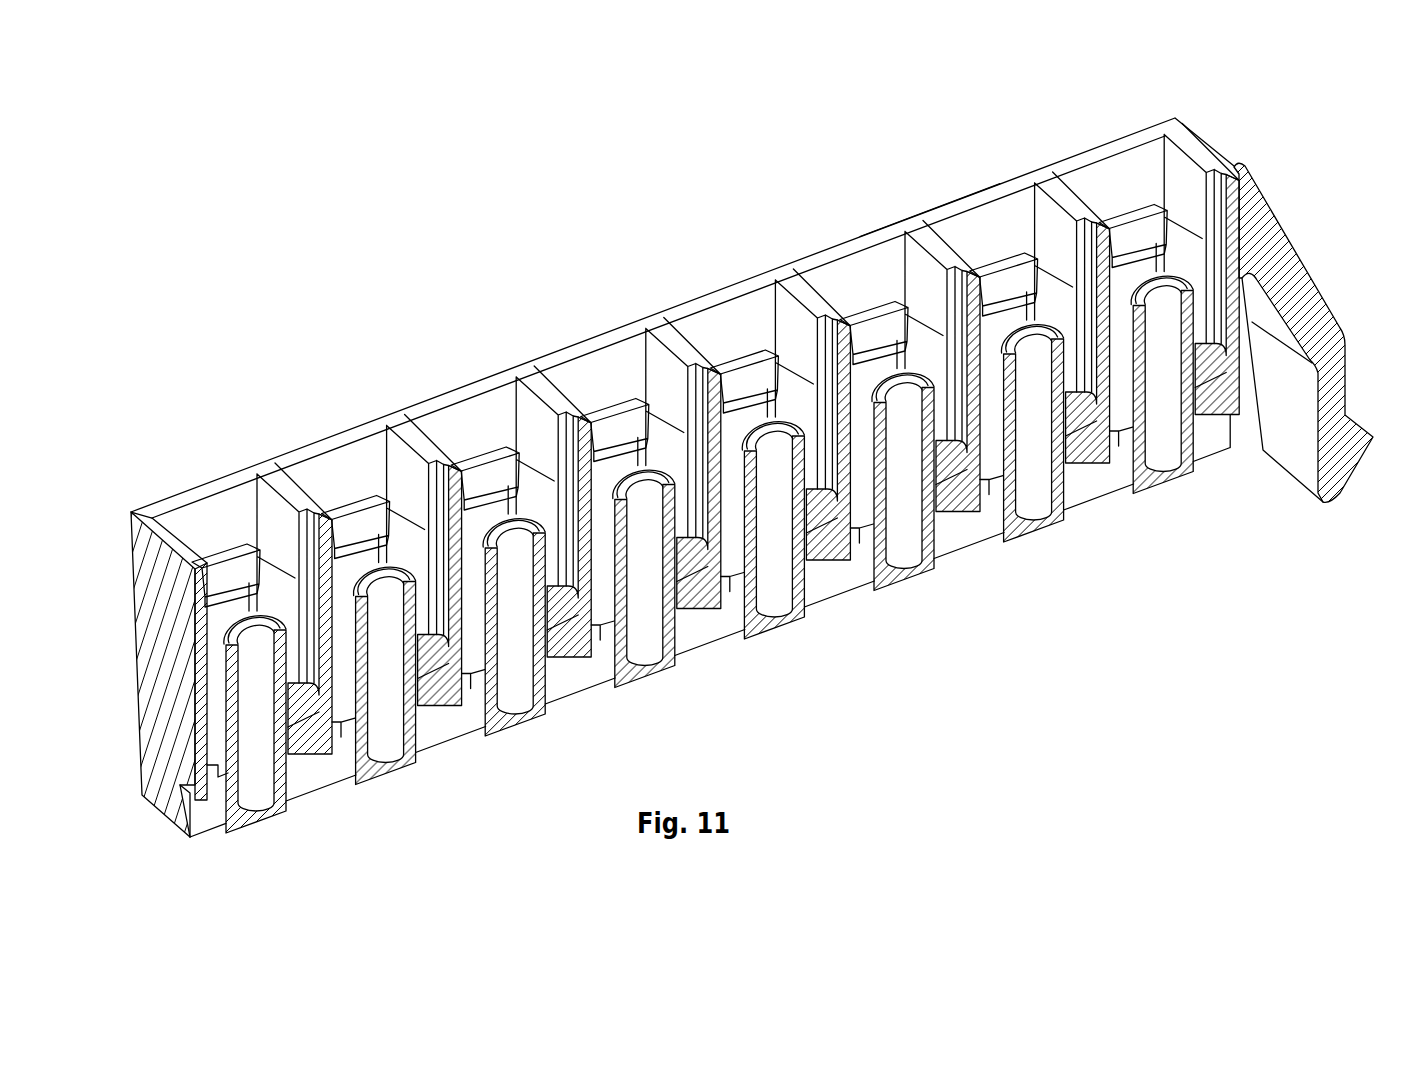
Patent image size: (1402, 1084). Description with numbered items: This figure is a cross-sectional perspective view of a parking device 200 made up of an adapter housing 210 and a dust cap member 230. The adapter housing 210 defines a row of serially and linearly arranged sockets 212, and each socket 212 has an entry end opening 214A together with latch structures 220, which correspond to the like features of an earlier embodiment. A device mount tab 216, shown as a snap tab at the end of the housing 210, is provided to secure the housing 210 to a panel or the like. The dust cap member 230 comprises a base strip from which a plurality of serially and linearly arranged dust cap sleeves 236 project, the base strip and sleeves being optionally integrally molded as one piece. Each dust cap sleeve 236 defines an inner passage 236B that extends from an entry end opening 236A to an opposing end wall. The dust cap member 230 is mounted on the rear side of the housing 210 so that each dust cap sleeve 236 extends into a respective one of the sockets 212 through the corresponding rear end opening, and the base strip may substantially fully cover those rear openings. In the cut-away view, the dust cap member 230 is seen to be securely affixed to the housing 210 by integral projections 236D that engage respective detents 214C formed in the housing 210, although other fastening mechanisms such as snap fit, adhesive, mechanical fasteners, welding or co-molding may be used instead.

The parking device 200 is at (702, 200).
The adapter housing 210 is at (130, 716).
The socket 212 is at (699, 292).
The entry end opening 214A is at (875, 240).
The detent 214C is at (742, 639).
The device mount tab 216 is at (1293, 462).
The latch structure 220 is at (338, 474).
The dust cap member 230 is at (318, 800).
The dust cap sleeve 236 is at (425, 710).
The entry end opening 236A is at (475, 535).
The inner passage 236B is at (426, 693).
The integral projection 236D is at (592, 580).